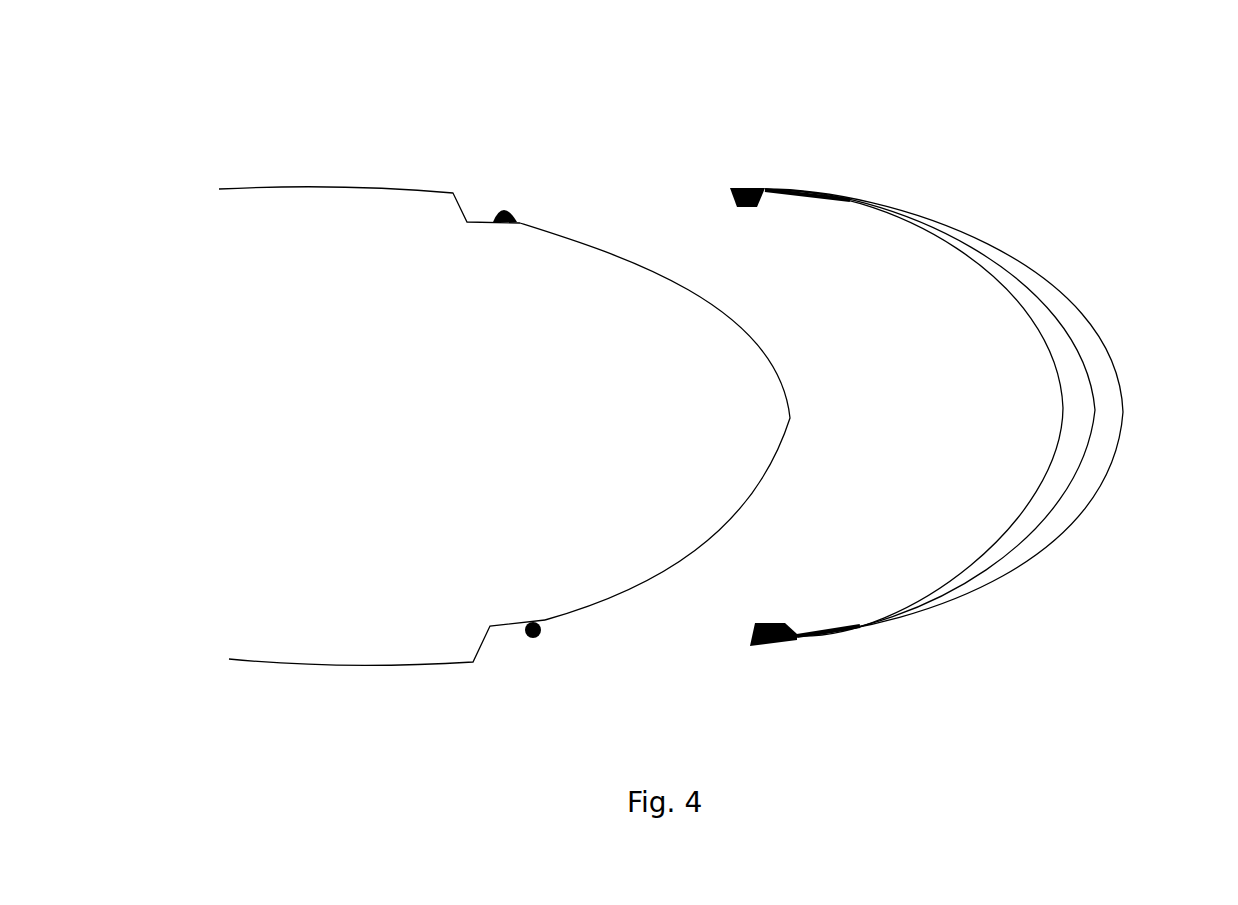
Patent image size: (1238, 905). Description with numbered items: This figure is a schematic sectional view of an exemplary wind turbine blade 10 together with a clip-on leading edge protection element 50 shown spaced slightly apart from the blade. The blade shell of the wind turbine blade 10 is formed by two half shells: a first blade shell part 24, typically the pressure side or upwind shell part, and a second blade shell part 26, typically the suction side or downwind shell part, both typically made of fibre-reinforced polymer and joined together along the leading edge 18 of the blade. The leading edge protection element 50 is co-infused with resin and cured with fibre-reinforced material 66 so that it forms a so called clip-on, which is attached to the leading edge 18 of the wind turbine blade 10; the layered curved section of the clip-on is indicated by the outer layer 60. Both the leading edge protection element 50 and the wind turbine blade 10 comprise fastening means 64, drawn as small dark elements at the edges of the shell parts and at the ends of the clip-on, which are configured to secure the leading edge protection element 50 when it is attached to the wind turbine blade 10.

The wind turbine blade 10 is at (250, 124).
The leading edge 18 is at (790, 418).
The first blade shell part 24 is at (376, 668).
The second blade shell part 26 is at (354, 187).
The leading edge protection element 50 is at (1153, 497).
The outer layer 60 is at (1123, 393).
The fastening means 64 is at (513, 210).
The fibre-reinforced material 66 is at (1040, 515).